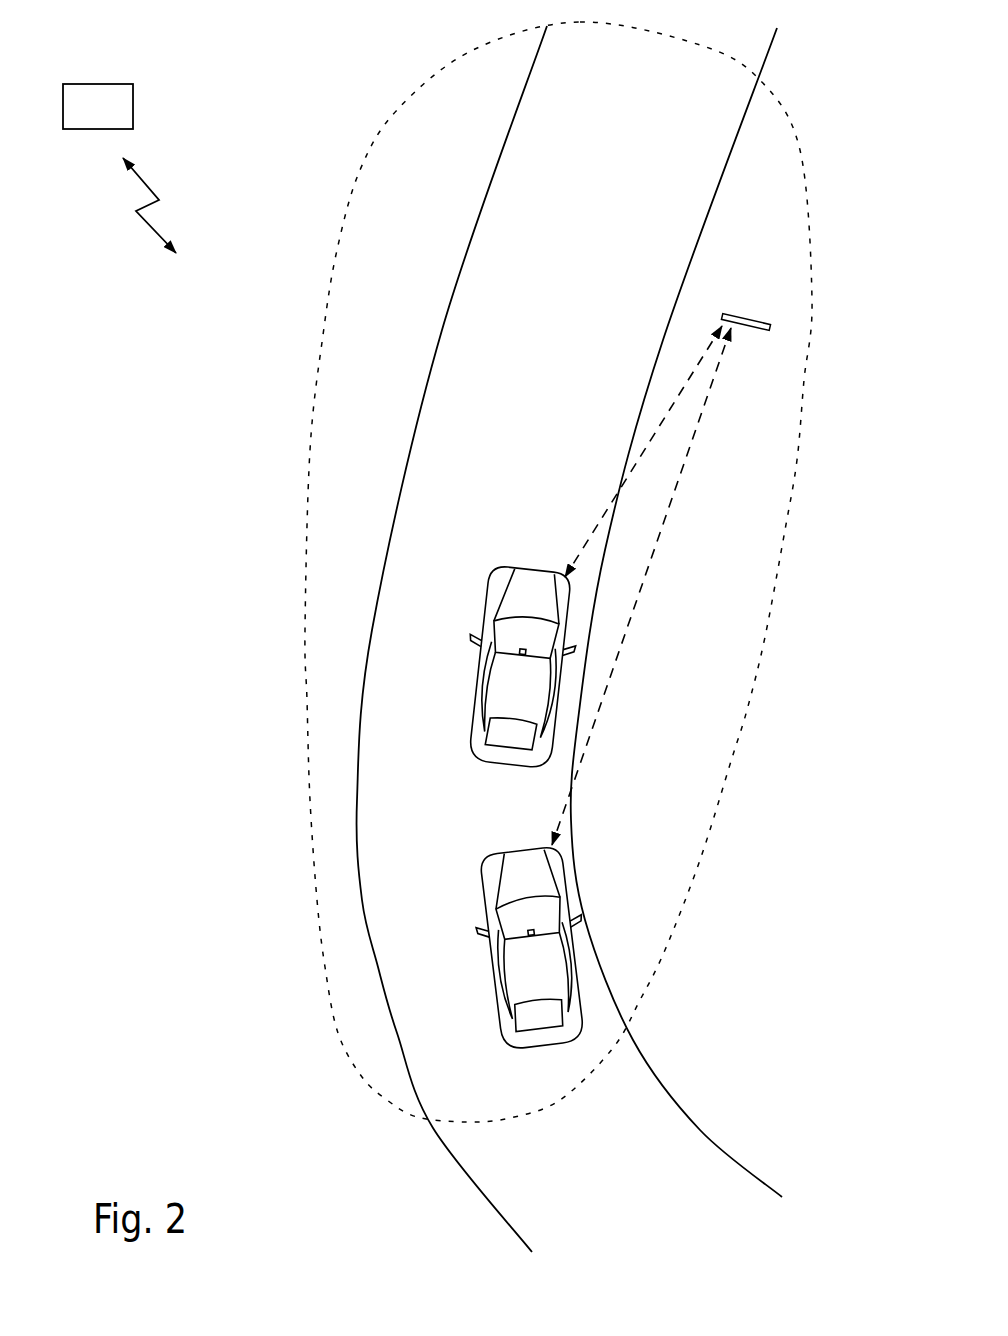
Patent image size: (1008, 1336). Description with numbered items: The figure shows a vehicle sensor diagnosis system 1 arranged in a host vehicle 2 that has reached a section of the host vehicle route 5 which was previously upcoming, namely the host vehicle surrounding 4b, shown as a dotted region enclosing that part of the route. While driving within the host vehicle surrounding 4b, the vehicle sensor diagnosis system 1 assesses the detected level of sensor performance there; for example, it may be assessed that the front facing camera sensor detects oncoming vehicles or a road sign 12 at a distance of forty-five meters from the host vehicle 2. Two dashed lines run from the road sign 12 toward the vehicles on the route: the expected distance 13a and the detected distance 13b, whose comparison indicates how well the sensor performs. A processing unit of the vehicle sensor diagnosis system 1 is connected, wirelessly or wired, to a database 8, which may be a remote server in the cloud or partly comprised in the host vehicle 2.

The vehicle sensor diagnosis system 1 is at (488, 925).
The host vehicle 2 is at (452, 860).
The host vehicle surrounding 4b is at (307, 698).
The host vehicle route 5 is at (607, 1170).
The database 8 is at (119, 168).
The road sign 12 is at (764, 310).
The expected distance 13a is at (624, 631).
The detected distance 13b is at (669, 398).